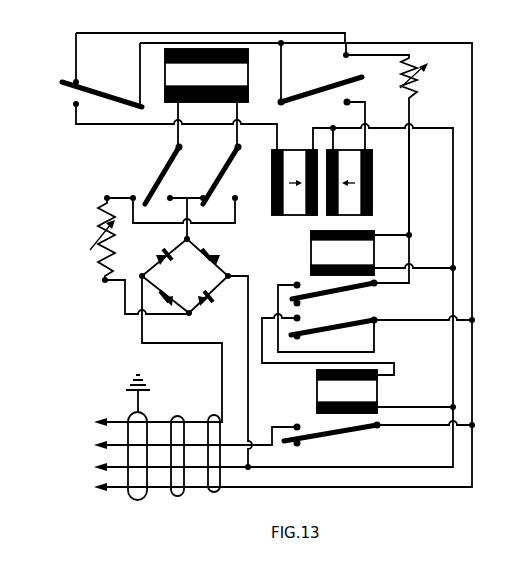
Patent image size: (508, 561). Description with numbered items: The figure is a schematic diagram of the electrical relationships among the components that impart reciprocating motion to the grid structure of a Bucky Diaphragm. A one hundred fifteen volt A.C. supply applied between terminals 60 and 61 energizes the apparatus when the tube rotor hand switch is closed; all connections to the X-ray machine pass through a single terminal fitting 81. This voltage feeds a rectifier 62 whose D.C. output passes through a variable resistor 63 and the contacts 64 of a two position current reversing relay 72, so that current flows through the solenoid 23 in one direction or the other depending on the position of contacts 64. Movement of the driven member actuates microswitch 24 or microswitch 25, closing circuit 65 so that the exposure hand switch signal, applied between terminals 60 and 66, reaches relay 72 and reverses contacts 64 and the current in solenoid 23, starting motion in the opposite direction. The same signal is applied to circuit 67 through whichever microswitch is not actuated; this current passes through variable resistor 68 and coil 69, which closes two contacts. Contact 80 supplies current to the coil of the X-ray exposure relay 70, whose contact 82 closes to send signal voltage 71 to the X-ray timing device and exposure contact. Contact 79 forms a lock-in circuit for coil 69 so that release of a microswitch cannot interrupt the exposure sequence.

The solenoid 23 is at (212, 49).
The microswitch 24 is at (75, 93).
The microswitch 25 is at (331, 85).
The circuit 65 is at (97, 125).
The variable resistor 68 is at (419, 86).
The circuit 67 is at (412, 148).
The two position current reversing relay 72 is at (372, 197).
The coil 69 is at (358, 231).
The contacts 64 is at (166, 162).
The variable resistor 63 is at (92, 272).
The rectifier 62 is at (163, 297).
The contact 79 is at (316, 292).
The contact 80 is at (340, 323).
The X-ray exposure relay 70 is at (377, 400).
The contact 82 is at (360, 431).
The terminal fitting 81 is at (212, 493).
The terminal 61 is at (147, 423).
The signal voltage 71 is at (172, 446).
The terminal 60 is at (263, 468).
The terminal 66 is at (272, 488).